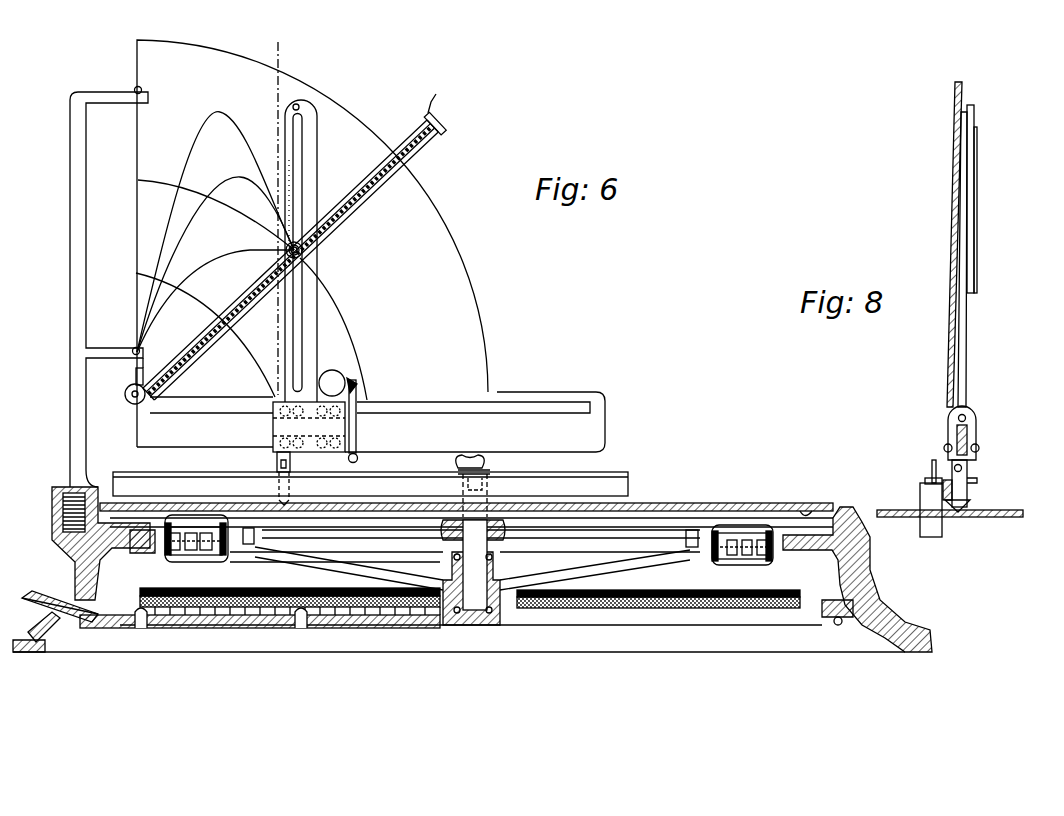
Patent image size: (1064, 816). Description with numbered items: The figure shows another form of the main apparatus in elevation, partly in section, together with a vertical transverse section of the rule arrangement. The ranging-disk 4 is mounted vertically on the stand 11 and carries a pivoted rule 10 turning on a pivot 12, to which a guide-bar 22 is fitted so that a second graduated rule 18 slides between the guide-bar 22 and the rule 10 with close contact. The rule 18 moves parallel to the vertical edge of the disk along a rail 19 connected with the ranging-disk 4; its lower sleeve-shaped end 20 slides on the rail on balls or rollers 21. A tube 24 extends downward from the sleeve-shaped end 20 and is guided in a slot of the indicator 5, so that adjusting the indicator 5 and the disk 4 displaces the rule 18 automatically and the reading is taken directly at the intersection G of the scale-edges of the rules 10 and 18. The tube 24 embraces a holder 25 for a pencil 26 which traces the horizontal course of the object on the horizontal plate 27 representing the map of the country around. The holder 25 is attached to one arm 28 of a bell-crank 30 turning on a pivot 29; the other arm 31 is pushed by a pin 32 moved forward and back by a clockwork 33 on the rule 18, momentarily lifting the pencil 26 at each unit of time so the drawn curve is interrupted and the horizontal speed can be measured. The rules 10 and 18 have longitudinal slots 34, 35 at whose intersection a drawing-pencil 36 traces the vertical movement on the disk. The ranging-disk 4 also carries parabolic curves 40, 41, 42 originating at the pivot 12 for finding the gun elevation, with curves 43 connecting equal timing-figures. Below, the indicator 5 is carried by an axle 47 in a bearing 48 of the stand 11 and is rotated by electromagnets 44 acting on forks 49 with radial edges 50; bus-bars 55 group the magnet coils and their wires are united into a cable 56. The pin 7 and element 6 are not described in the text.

In FIG. 6, the ranging-disk 4 is at (433, 189).
In FIG. 6, the indicator 5 is at (618, 486).
In FIG. 6, the base casting 6 is at (808, 512).
In FIG. 6, the pin 7 is at (423, 117).
In FIG. 6, the rule 10 is at (437, 119).
In FIG. 8, the rule 10 is at (960, 181).
In FIG. 6, the stand 11 is at (77, 273).
In FIG. 6, the pivot 12 is at (133, 400).
In FIG. 6, the graduated rule 18 is at (305, 117).
In FIG. 8, the graduated rule 18 is at (965, 331).
In FIG. 6, the rail 19 is at (588, 436).
In FIG. 8, the rail 19 is at (956, 428).
In FIG. 6, the sleeve-shaped end 20 is at (273, 426).
In FIG. 8, the sleeve-shaped end 20 is at (978, 427).
In FIG. 8, the balls or rollers 21 is at (943, 449).
In FIG. 6, the guide-bar 22 is at (345, 222).
In FIG. 8, the guide-bar 22 is at (975, 219).
In FIG. 6, the tube 24 is at (275, 461).
In FIG. 8, the tube 24 is at (968, 490).
In FIG. 8, the holder 25 is at (970, 481).
In FIG. 6, the lead-pencil or drawing-pen 26 is at (278, 501).
In FIG. 8, the lead-pencil or drawing-pen 26 is at (961, 506).
In FIG. 6, the horizontal plate 27 is at (707, 503).
In FIG. 6, the arm of bell-crank 28 is at (295, 462).
In FIG. 6, the pivot 29 is at (358, 460).
In FIG. 6, the bell-crank 30 is at (356, 433).
In FIG. 6, the arm of bell-crank 31 is at (356, 395).
In FIG. 6, the pin 32 is at (347, 380).
In FIG. 6, the clockwork 33 is at (337, 368).
In FIG. 6, the longitudinal slot 34 is at (373, 178).
In FIG. 6, the longitudinal slot 35 is at (296, 150).
In FIG. 6, the drawing-pencil 36 is at (304, 254).
In FIG. 6, the intersection G is at (286, 249).
In FIG. 6, the parabolic curve 40 is at (207, 114).
In FIG. 6, the parabolic curve 41 is at (217, 181).
In FIG. 6, the parabolic curve 42 is at (201, 274).
In FIG. 6, the curves 43 is at (148, 181).
In FIG. 6, the magnets 44 is at (745, 568).
In FIG. 6, the axle 47 is at (472, 600).
In FIG. 6, the bearing 48 is at (488, 612).
In FIG. 6, the forks 49 is at (703, 563).
In FIG. 6, the radial edges 50 is at (743, 527).
In FIG. 6, the bus-bars 55 is at (690, 608).
In FIG. 6, the cable 56 is at (40, 595).